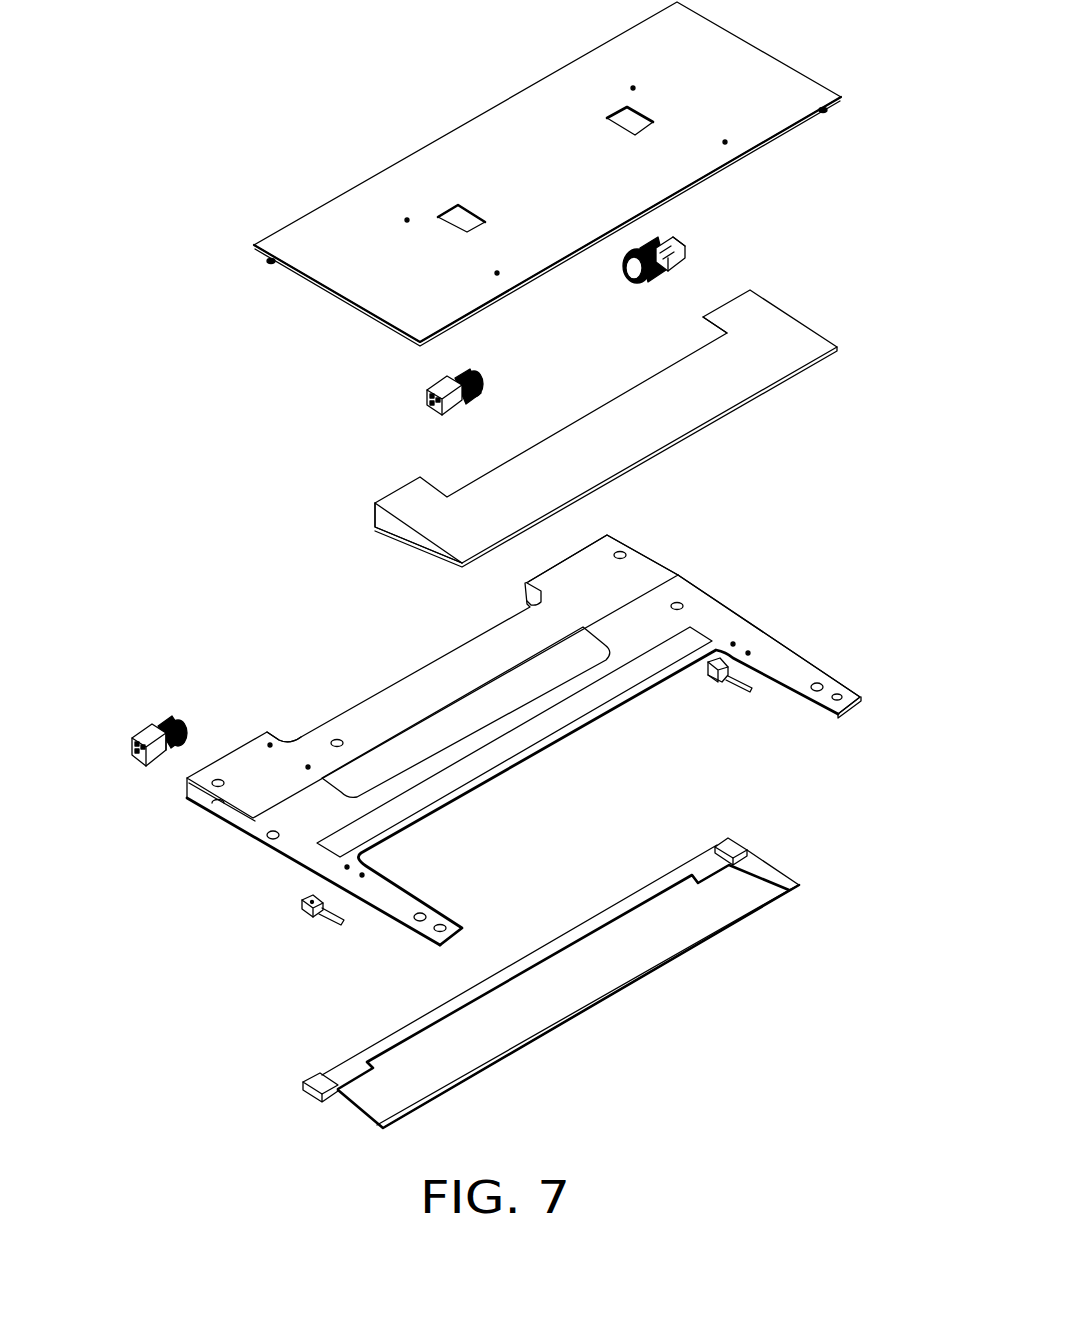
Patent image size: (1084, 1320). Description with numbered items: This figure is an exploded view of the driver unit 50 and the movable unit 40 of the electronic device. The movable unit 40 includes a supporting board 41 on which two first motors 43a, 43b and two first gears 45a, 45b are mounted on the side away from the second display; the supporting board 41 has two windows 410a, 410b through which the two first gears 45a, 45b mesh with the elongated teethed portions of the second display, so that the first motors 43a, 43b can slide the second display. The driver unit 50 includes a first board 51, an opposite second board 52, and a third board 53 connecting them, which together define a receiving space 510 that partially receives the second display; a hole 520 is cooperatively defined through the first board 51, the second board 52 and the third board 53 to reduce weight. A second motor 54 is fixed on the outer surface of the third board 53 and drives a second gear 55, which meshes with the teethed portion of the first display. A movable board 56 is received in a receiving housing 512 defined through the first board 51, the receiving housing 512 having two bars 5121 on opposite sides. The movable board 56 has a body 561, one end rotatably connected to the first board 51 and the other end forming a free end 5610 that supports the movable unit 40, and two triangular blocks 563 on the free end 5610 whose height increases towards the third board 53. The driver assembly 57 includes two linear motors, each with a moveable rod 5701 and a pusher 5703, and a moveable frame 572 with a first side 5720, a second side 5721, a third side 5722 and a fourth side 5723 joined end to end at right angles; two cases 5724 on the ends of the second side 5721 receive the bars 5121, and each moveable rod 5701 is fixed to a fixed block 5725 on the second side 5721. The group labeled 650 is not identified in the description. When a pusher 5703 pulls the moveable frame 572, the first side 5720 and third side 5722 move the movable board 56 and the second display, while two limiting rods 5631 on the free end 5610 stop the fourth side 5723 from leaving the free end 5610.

The movable unit 40 is at (300, 372).
The supporting board 41 is at (577, 174).
The window 410a is at (453, 217).
The window 410b is at (622, 120).
The first motor 43a is at (470, 397).
The first motor 43b is at (676, 283).
The first gear 45a is at (474, 393).
The first gear 45b is at (650, 283).
The driver unit 50 is at (205, 567).
The first board 51 is at (503, 717).
The receiving space 510 is at (233, 813).
The receiving housing 512 is at (775, 700).
The bar 5121 is at (775, 663).
The second board 52 is at (655, 577).
The hole 520 is at (318, 722).
The third board 53 is at (185, 787).
The second motor 54 is at (146, 725).
The second gear 55 is at (172, 717).
The movable board 56 is at (270, 450).
The body 561 is at (510, 490).
The free end 5610 is at (717, 320).
The triangular block 563 is at (375, 516).
The limiting rod 5631 is at (377, 525).
The driver assembly 57 is at (146, 931).
The fastening member 650 is at (215, 896).
The moveable rod 5701 is at (329, 931).
The pusher 5703 is at (303, 910).
The moveable frame 572 is at (285, 1071).
The first side 5720 is at (763, 873).
The second side 5721 is at (580, 935).
The third side 5722 is at (357, 1107).
The fourth side 5723 is at (510, 1053).
The case 5724 is at (735, 845).
The fixed block 5725 is at (722, 868).